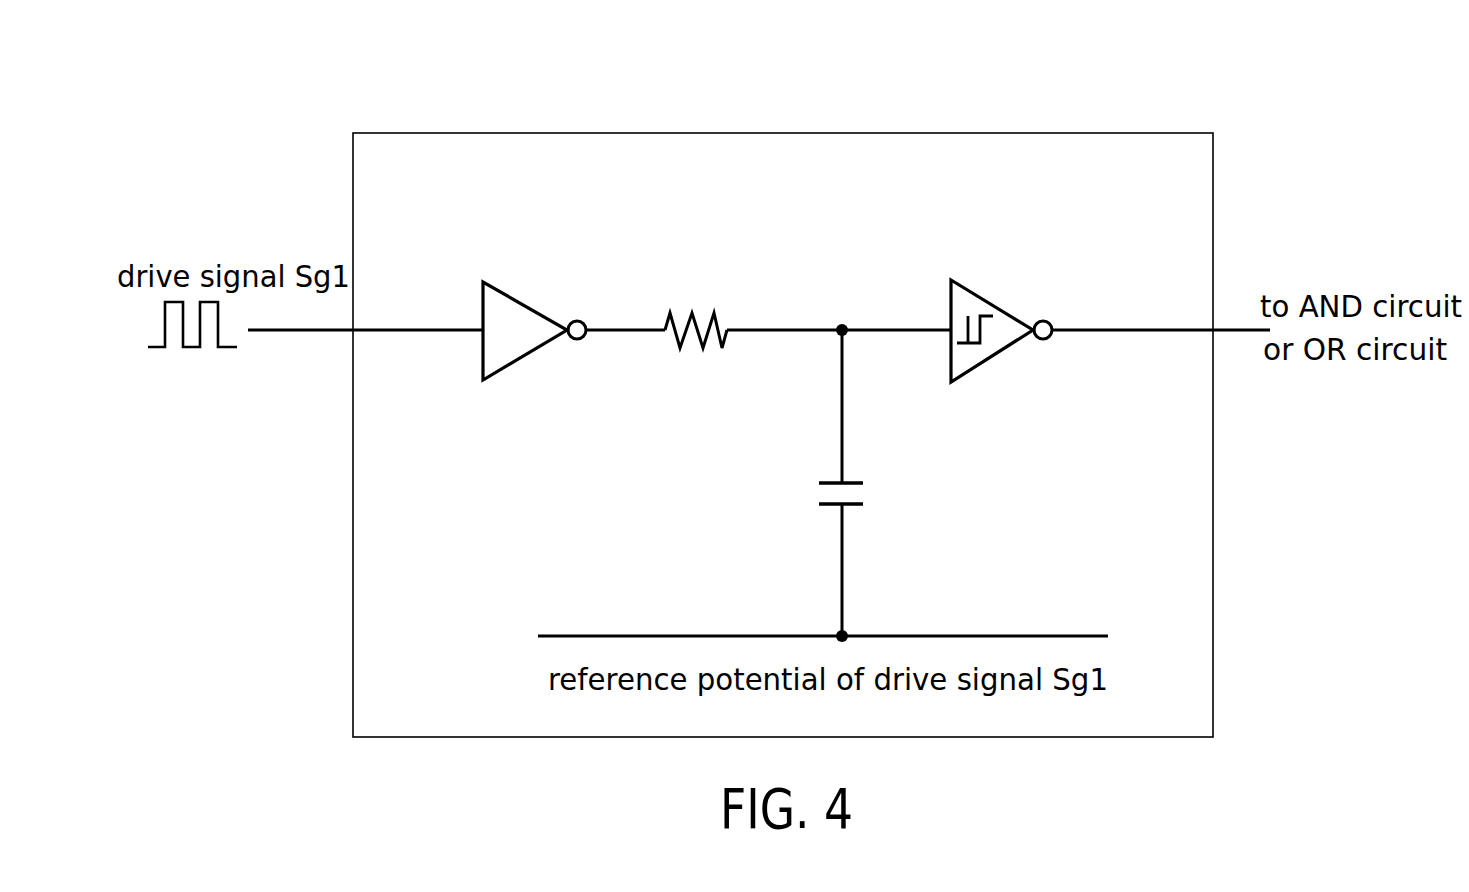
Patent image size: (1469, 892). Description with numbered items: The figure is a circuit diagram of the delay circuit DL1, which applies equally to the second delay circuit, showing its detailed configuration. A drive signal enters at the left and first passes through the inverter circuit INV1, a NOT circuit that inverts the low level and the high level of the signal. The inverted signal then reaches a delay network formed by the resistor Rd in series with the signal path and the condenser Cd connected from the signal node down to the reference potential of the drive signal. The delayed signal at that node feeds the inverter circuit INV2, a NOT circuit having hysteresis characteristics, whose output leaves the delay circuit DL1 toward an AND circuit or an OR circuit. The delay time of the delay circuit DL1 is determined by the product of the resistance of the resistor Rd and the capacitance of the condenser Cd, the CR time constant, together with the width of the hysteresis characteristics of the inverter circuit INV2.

The delay circuit DL1 is at (765, 133).
The inverter circuit INV1 is at (520, 365).
The resistor Rd is at (697, 355).
The condenser Cd is at (825, 492).
The inverter circuit having hysteresis characteristics INV2 is at (985, 365).